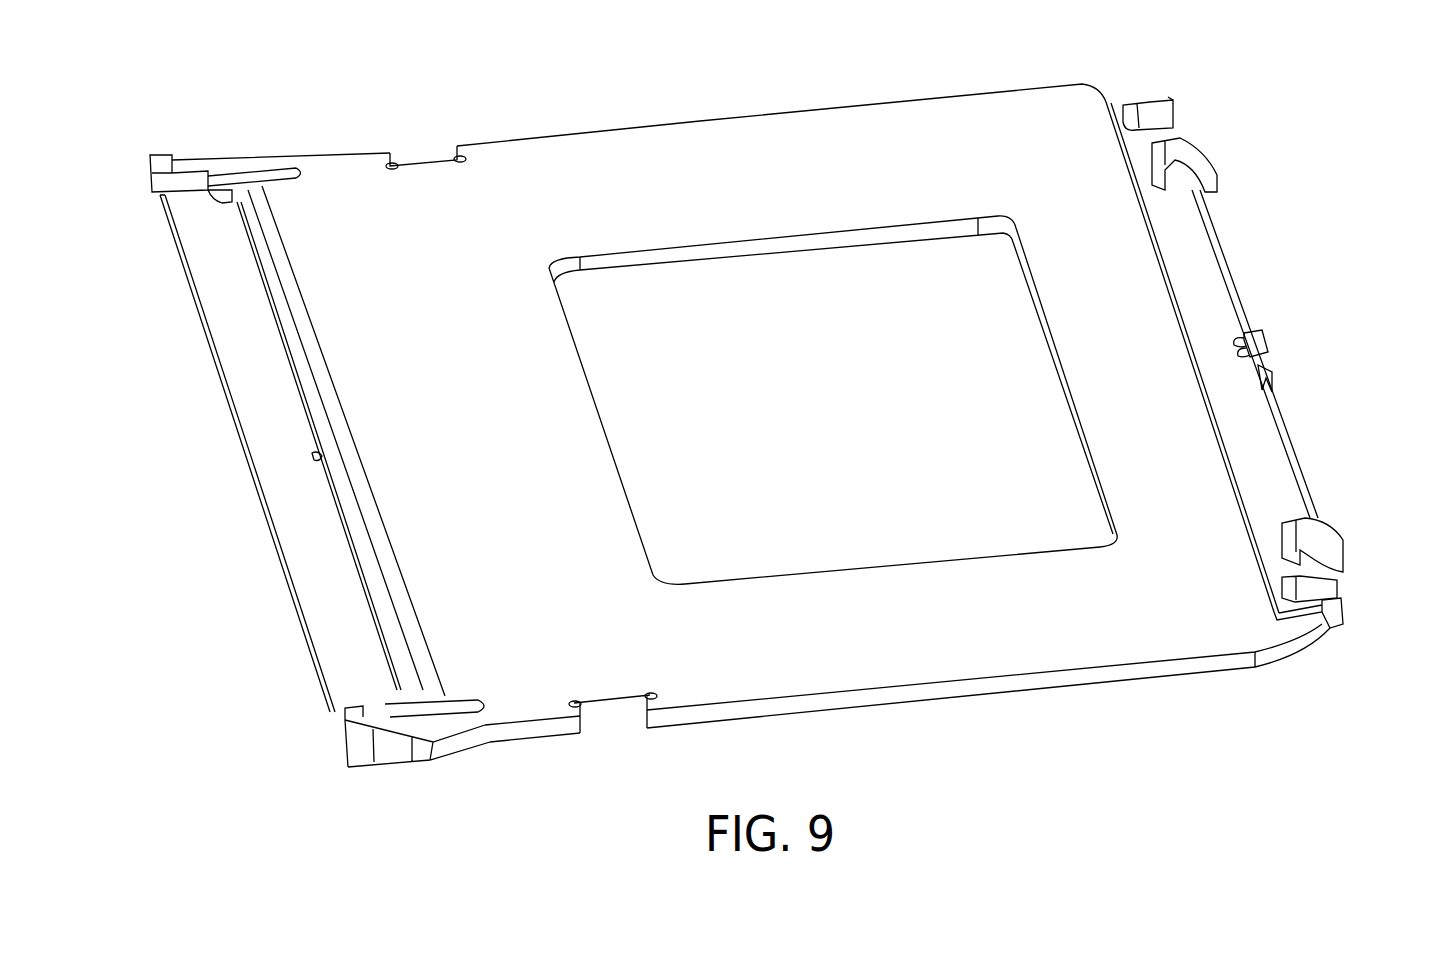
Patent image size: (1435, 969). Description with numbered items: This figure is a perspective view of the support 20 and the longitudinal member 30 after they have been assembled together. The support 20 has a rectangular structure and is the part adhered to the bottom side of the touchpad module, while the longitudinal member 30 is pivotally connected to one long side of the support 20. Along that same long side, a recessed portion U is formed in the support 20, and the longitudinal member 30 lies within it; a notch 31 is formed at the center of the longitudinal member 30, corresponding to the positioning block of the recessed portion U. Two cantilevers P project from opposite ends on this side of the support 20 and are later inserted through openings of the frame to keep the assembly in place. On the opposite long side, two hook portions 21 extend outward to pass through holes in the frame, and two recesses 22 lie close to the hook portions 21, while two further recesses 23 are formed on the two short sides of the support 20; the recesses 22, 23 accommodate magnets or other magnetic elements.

The support 20 is at (897, 130).
The hook portion 21 is at (1190, 160).
The recess 22 is at (1158, 112).
The recess 23 is at (432, 160).
The longitudinal member 30 is at (262, 446).
The notch 31 is at (322, 457).
The cantilever P is at (190, 162).
The recessed portion U is at (222, 200).